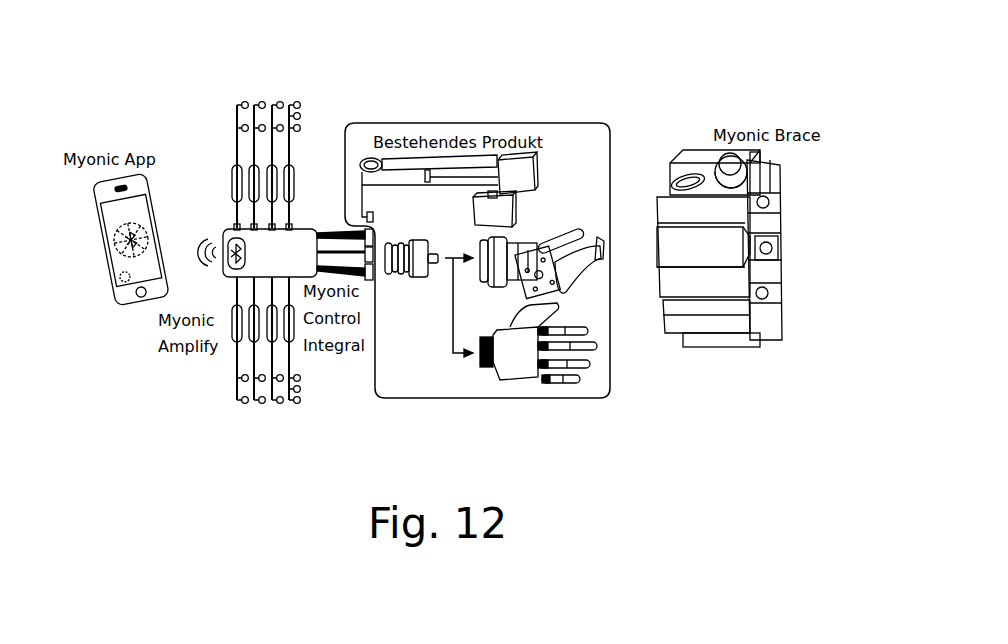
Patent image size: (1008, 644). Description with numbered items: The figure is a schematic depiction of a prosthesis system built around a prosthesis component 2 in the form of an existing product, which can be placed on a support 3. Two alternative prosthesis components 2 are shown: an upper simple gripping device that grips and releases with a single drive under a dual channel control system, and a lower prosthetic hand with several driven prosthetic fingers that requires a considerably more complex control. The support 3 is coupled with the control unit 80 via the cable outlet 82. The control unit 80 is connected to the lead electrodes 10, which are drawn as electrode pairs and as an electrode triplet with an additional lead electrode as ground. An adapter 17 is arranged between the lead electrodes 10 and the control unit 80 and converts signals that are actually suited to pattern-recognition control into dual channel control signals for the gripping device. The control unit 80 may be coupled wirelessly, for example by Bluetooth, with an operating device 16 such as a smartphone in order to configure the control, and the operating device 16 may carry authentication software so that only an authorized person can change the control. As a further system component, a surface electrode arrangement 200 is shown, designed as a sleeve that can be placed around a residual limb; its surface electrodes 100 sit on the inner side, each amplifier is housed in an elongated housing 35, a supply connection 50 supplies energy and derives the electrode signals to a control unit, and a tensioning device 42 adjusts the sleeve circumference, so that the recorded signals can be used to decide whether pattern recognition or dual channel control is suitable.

The prosthesis component 2 is at (538, 242).
The support 3 is at (407, 279).
The lead electrodes 10 is at (243, 106).
The operating device 16 is at (106, 325).
The adapter 17 is at (232, 176).
The elongated housing 35 is at (660, 240).
The tensioning device 42 is at (772, 171).
The supply connection 50 is at (688, 180).
The control unit 80 is at (227, 233).
The cable outlet 82 is at (320, 232).
The surface electrodes 100 is at (777, 247).
The surface electrode arrangement 200 is at (672, 168).